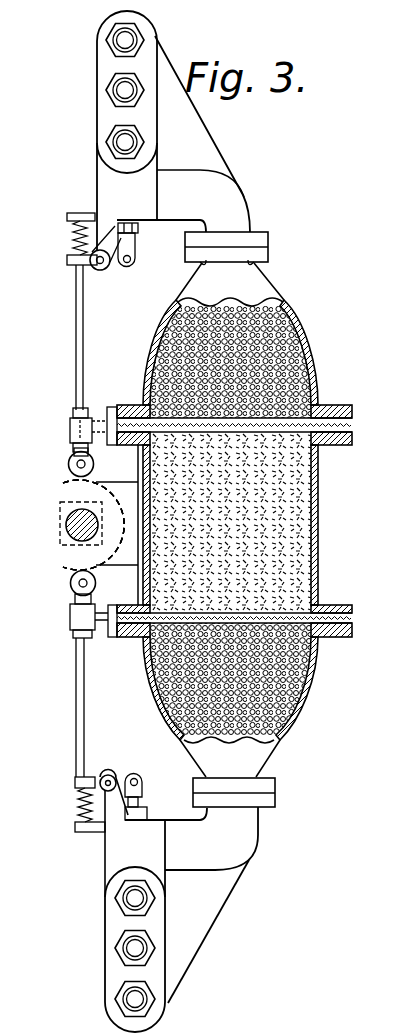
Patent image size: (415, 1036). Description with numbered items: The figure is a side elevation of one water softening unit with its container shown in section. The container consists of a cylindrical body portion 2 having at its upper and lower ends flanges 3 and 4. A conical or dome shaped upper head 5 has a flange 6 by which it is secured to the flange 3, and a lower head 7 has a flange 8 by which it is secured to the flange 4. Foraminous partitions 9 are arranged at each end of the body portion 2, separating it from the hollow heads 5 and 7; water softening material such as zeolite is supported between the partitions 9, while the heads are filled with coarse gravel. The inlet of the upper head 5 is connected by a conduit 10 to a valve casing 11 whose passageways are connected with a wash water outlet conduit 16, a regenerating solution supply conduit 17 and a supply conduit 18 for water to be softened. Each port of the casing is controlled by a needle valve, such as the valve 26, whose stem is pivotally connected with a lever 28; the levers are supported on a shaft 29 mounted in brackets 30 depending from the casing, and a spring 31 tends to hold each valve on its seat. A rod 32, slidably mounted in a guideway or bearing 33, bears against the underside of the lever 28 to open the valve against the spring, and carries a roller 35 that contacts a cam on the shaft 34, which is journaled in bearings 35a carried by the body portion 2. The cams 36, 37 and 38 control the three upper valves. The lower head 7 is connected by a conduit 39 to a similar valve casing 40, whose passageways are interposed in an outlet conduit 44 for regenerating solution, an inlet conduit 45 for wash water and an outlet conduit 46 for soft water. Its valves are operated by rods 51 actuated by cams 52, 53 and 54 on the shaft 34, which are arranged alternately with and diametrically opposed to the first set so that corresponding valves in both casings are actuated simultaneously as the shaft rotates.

The cylindrical body portion 2 is at (320, 518).
The upper flange of body portion 3 is at (334, 445).
The lower flange of body portion 4 is at (234, 598).
The upper head 5 is at (308, 343).
The flange of upper head 6 is at (334, 410).
The lower head 7 is at (305, 697).
The flange of lower head 8 is at (333, 634).
The foraminous partitions 9 is at (263, 425).
The conduit 10 is at (215, 203).
The valve casing 11 is at (104, 152).
The wash water outlet conduit 16 is at (107, 38).
The regenerating solution supply conduit 17 is at (108, 137).
The hard water supply conduit 18 is at (108, 89).
The needle valve 26 is at (138, 236).
The lever 28 is at (119, 265).
The shaft 29 is at (101, 270).
The brackets 30 is at (118, 235).
The spring 31 is at (72, 241).
The rod 32 is at (84, 350).
The guideway or bearing 33 is at (70, 427).
The shaft 34 is at (66, 523).
The roller 35 is at (95, 463).
The bearings 35a is at (131, 550).
The cam 36 is at (62, 485).
The cam 37 is at (58, 497).
The cam 38 is at (58, 512).
The conduit 39 is at (191, 905).
The valve casing 40 is at (112, 904).
The regenerating solution outlet conduit 44 is at (125, 890).
The wash water inlet conduit 45 is at (125, 948).
The soft water outlet conduit 46 is at (125, 998).
The operating rods 51 is at (85, 730).
The cam 52 is at (62, 567).
The cam 53 is at (58, 538).
The cam 54 is at (58, 554).